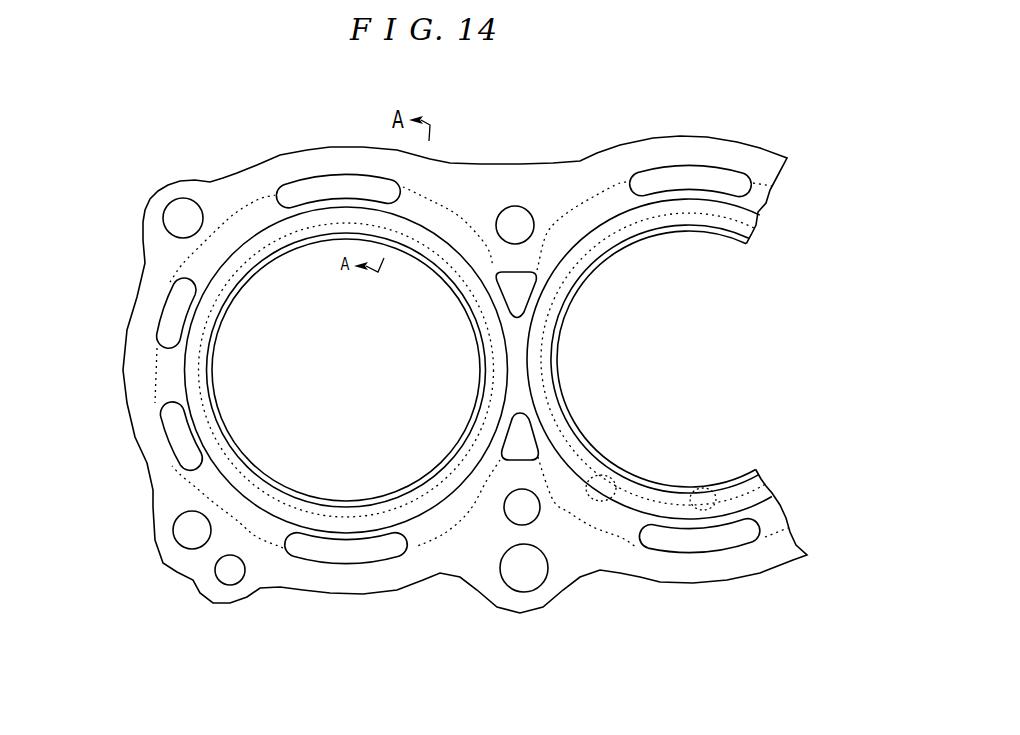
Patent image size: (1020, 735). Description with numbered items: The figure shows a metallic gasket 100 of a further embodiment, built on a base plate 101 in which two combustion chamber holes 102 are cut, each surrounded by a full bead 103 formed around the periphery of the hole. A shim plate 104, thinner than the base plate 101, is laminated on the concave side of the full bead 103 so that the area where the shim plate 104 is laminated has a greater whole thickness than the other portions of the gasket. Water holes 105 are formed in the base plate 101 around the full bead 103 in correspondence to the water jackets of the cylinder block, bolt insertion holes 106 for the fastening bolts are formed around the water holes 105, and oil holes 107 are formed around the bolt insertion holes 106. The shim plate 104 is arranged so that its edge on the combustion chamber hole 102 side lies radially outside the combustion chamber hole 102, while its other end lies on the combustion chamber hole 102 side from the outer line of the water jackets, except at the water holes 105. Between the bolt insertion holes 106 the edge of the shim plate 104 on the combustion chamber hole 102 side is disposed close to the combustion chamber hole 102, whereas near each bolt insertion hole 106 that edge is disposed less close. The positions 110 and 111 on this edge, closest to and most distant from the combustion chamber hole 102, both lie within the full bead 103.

The metallic gasket 100 is at (469, 322).
The base plate 101 is at (465, 155).
The combustion chamber hole 102 is at (520, 423).
The full bead 103 is at (428, 322).
The shim plate 104 is at (249, 155).
The water holes 105 is at (399, 369).
The bolt insertion holes 106 is at (385, 384).
The oil holes 107 is at (381, 610).
The position closest to the combustion chamber hole 110 is at (483, 423).
The position most distant from the combustion chamber hole 111 is at (651, 555).